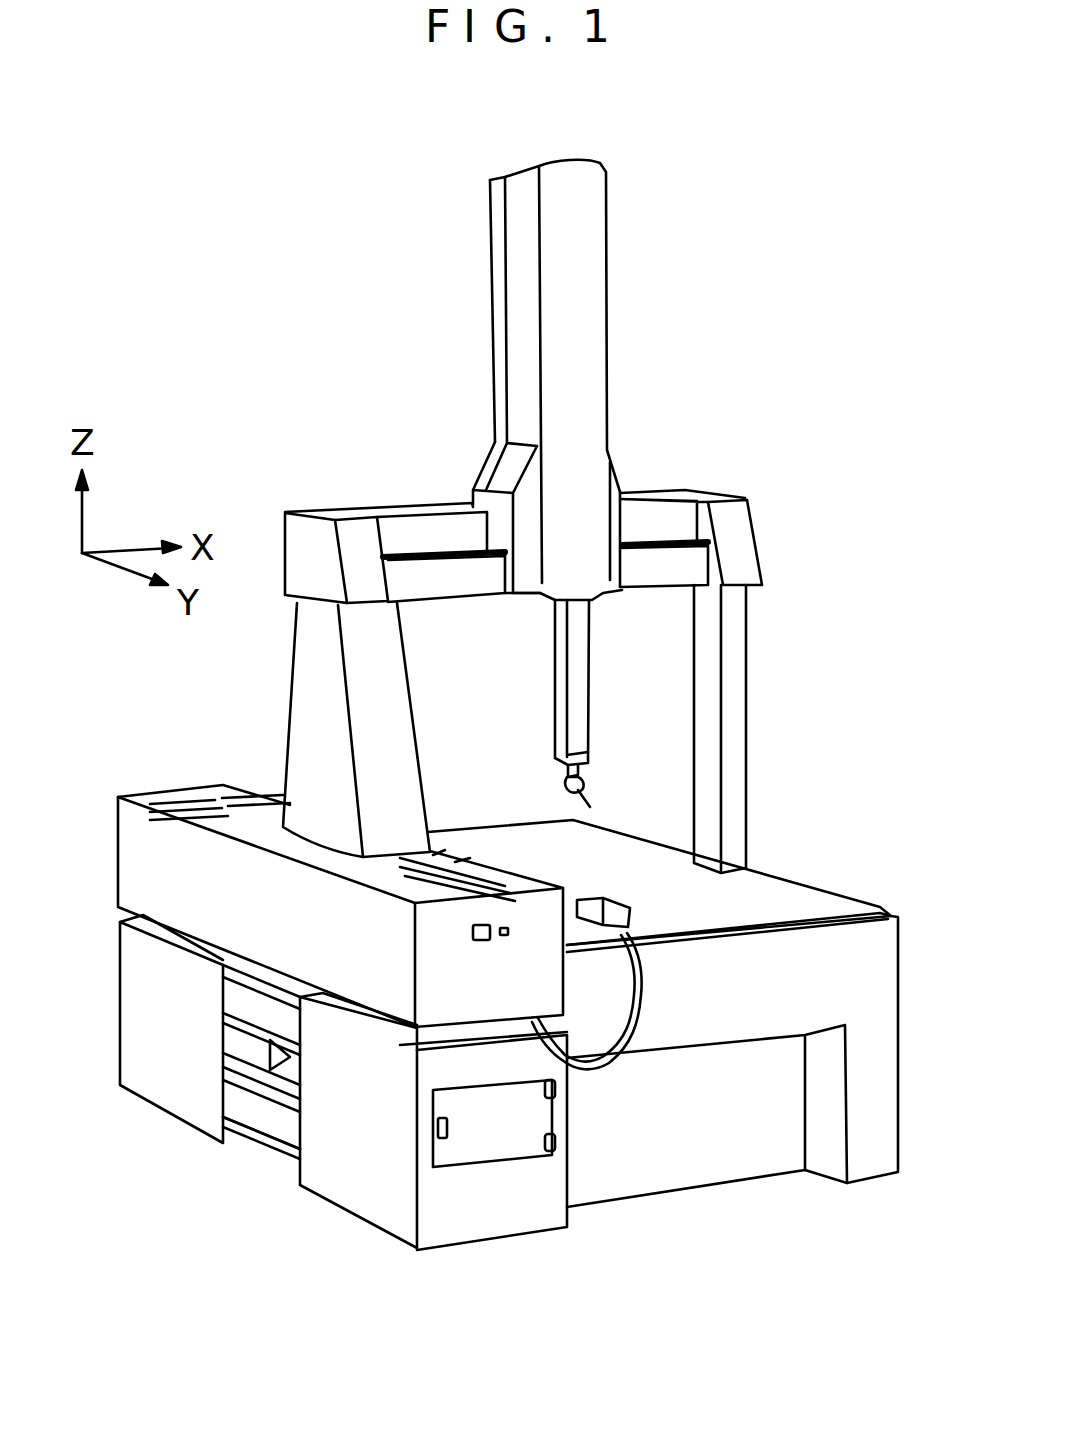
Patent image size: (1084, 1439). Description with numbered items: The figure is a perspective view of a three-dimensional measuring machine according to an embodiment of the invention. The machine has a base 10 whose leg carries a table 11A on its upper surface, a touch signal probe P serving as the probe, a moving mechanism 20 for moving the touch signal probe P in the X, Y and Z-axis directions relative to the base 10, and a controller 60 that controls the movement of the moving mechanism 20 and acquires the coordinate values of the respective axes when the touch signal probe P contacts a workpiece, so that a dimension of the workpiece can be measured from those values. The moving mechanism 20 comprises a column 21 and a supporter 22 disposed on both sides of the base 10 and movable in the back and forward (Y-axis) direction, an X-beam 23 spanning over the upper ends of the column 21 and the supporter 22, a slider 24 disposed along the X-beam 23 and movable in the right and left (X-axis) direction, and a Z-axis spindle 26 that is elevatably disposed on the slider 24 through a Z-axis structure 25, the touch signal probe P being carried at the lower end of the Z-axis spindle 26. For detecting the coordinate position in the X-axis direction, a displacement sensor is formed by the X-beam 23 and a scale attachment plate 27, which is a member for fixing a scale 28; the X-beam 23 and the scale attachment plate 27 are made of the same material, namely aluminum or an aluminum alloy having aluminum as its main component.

The base 10 is at (840, 903).
The table 11A is at (757, 885).
The moving mechanism 20 is at (838, 412).
The column 21 is at (300, 712).
The supporter 22 is at (748, 682).
The X-beam 23 is at (395, 507).
The slider 24 is at (503, 495).
The Z-axis structure 25 is at (577, 330).
The Z-axis spindle 26 is at (562, 682).
The scale attachment plate 27 is at (650, 537).
The scale 28 is at (662, 573).
The controller 60 is at (268, 1130).
The touch signal probe P is at (590, 790).